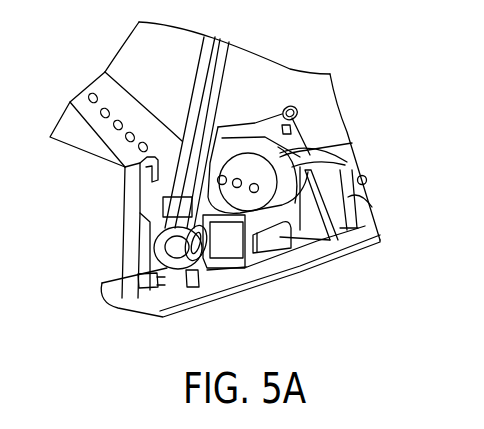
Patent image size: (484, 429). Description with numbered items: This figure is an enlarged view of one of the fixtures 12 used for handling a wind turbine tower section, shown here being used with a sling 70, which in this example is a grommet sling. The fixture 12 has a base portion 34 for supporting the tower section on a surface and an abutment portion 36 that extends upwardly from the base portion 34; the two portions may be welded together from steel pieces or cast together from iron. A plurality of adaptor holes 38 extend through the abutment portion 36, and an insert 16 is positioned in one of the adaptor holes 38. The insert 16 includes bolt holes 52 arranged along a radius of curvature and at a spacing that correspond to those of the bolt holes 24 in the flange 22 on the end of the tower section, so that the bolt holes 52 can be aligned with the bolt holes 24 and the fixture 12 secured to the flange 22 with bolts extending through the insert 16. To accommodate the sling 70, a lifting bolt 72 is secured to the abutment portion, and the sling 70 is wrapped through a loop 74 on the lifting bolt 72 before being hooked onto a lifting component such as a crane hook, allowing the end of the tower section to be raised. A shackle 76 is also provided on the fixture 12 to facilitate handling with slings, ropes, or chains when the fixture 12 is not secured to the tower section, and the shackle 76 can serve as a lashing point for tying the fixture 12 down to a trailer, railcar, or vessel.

The fixture 12 is at (303, 274).
The insert 16 is at (240, 158).
The flange 22 is at (117, 80).
The bolt holes 24 is at (89, 97).
The base portion 34 is at (348, 247).
The abutment portion 36 is at (125, 207).
The adaptor holes 38 is at (283, 187).
The bolt holes 52 is at (257, 196).
The sling 70 is at (203, 63).
The lifting bolt 72 is at (199, 284).
The loop 74 is at (158, 240).
The shackle 76 is at (293, 106).